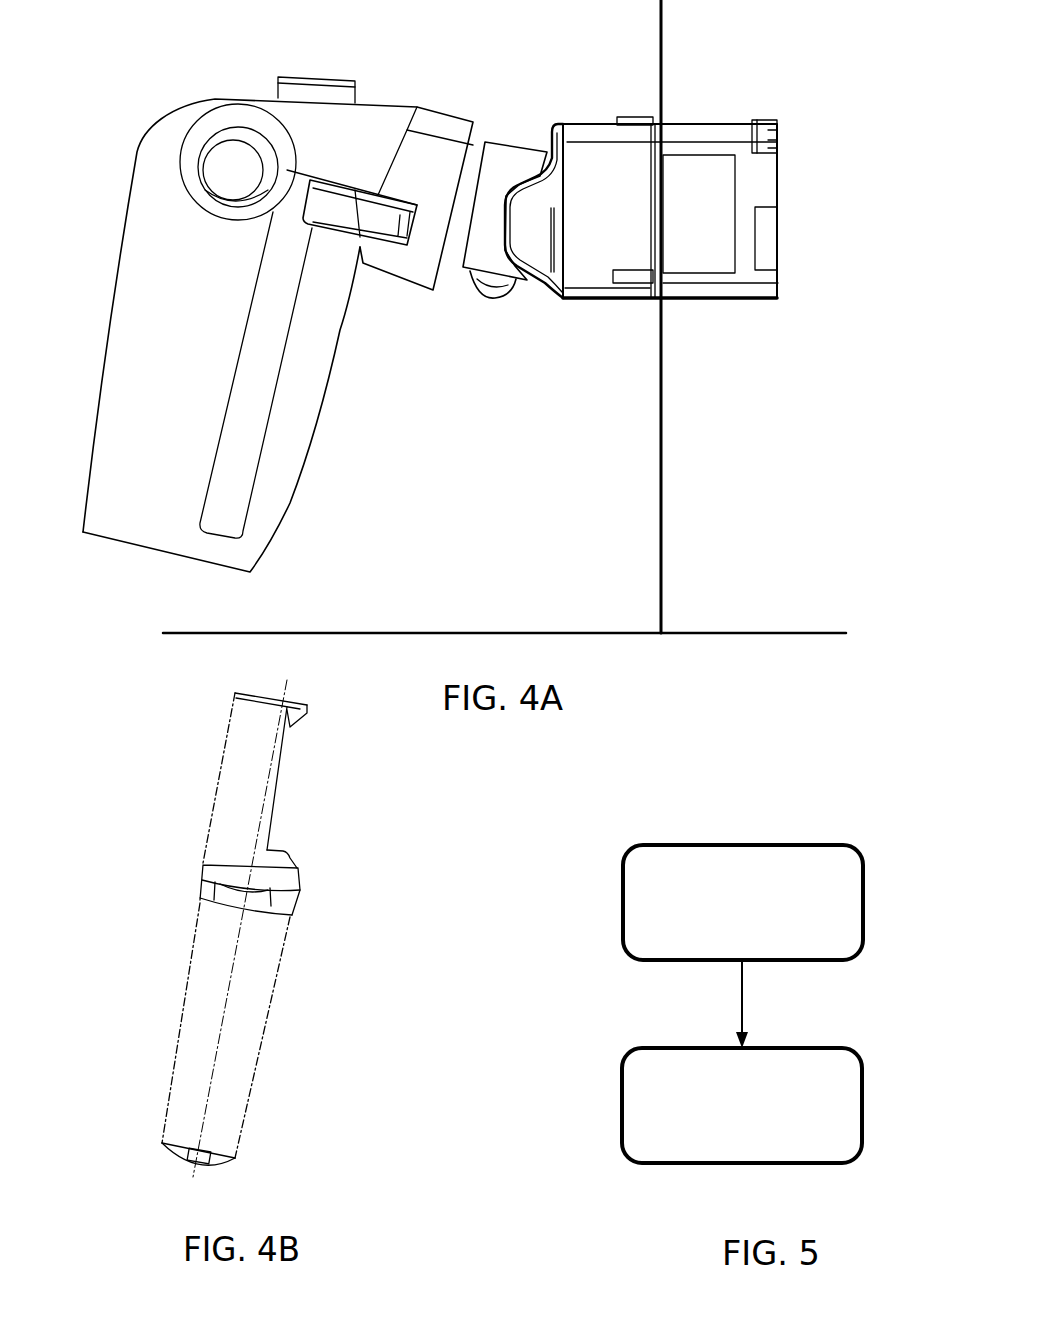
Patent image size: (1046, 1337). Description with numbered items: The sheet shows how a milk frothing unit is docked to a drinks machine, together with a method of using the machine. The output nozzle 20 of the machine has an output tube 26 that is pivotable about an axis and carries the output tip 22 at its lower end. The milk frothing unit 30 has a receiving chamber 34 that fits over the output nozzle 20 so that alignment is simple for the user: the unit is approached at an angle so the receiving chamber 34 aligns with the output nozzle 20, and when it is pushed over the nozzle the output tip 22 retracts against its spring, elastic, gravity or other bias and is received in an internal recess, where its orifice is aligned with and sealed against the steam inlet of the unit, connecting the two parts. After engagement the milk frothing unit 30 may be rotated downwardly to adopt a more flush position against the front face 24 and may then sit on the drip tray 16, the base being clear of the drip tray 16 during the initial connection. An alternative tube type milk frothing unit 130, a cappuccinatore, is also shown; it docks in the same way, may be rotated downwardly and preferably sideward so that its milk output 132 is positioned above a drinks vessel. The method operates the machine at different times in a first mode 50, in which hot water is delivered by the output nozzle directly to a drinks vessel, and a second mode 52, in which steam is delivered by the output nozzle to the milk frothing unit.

In FIG. 4A, the drip tray 16 is at (452, 632).
In FIG. 4A, the output nozzle 20 is at (757, 90).
In FIG. 4A, the output tip 22 is at (497, 300).
In FIG. 4A, the front face 24 is at (658, 522).
In FIG. 4A, the output tube 26 is at (518, 147).
In FIG. 4A, the milk frothing unit 30 is at (108, 193).
In FIG. 4A, the receiving chamber 34 is at (445, 112).
In FIG. 4B, the receiving chamber 34 is at (302, 802).
In FIG. 5, the first mode 50 is at (865, 915).
In FIG. 5, the second mode 52 is at (865, 1118).
In FIG. 4B, the milk frothing unit 130 is at (160, 938).
In FIG. 4B, the milk output 132 is at (212, 1181).